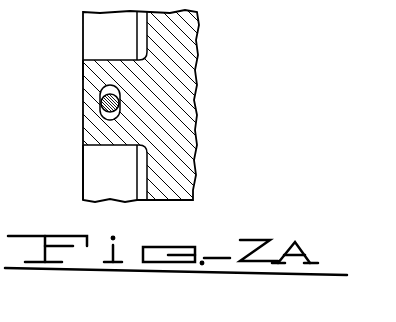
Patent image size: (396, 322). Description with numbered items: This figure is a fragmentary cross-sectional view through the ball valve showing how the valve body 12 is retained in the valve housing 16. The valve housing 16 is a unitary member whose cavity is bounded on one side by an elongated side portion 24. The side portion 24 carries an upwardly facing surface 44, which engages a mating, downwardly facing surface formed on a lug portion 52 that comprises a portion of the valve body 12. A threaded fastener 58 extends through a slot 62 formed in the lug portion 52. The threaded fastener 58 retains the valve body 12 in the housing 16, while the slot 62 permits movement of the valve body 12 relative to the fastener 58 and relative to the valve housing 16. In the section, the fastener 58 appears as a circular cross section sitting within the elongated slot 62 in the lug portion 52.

The valve body 12 is at (140, 175).
The valve housing 16 is at (82, 187).
The side portion 24 is at (95, 160).
The upwardly facing surface 44 is at (115, 41).
The lug portion 52 is at (93, 77).
The threaded fastener 58 is at (101, 106).
The slot 62 is at (120, 92).